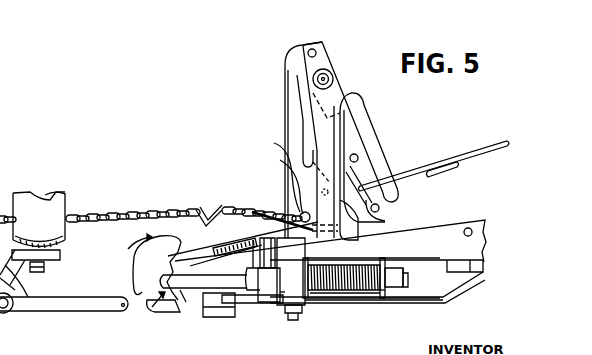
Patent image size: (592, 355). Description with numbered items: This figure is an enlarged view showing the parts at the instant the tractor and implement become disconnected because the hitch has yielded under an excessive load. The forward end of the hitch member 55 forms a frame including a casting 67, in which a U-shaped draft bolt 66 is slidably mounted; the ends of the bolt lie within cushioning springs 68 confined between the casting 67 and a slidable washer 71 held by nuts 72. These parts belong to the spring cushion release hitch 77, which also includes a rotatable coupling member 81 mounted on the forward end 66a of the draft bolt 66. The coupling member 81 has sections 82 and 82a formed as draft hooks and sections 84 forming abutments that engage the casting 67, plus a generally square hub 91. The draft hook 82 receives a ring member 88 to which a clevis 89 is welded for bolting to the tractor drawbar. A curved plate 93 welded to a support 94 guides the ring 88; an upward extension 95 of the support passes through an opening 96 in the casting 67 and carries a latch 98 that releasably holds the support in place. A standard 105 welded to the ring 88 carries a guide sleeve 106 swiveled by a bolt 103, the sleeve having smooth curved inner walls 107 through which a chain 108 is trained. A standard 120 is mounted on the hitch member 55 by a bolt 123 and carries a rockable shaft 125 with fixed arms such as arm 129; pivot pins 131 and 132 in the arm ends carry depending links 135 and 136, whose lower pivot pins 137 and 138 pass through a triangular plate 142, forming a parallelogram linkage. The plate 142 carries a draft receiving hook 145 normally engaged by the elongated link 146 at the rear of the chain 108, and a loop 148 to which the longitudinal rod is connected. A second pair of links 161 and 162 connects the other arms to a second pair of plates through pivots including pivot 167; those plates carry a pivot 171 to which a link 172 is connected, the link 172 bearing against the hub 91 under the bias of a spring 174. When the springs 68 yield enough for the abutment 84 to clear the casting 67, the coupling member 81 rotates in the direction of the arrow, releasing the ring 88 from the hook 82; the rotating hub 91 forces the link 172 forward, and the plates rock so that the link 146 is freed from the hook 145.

The hitch member 55 is at (447, 218).
The draft bolt 66 is at (403, 268).
The forward end of the draft bolt 66a is at (190, 282).
The casting 67 is at (282, 292).
The cushioning springs 68 is at (350, 280).
The slidable washer 71 is at (387, 298).
The nuts 72 is at (392, 268).
The spring cushion release hitch 77 is at (322, 309).
The rotatable coupling member 81 is at (126, 251).
The draft hook 82 is at (134, 290).
The draft hook section 82a is at (190, 302).
The abutments 84 is at (165, 302).
The ring member 88 is at (95, 312).
The clevis 89 is at (10, 316).
The hub 91 is at (146, 312).
The curved plate 93 is at (218, 310).
The support 94 is at (270, 287).
The upward extension 95 is at (253, 240).
The opening 96 is at (257, 283).
The latch 98 is at (266, 245).
The bolt 103 is at (45, 271).
The standard 105 is at (25, 302).
The guide sleeve 106 is at (25, 200).
The inner walls 107 is at (60, 198).
The chain 108 is at (137, 213).
The standard 120 is at (306, 131).
The bolt 123 is at (300, 318).
The shaft 125 is at (332, 78).
The arm 129 is at (322, 62).
The pivot pin 131 is at (313, 48).
The pivot pin 132 is at (341, 101).
The link 135 is at (300, 88).
The link 136 is at (360, 137).
The pivot pin 137 is at (363, 152).
The pivot pin 138 is at (408, 192).
The triangular plate 142 is at (358, 176).
The draft receiving hook 145 is at (348, 239).
The elongated link 146 is at (304, 213).
The loop 148 is at (430, 172).
The depending link 161 is at (293, 110).
The depending link 162 is at (348, 128).
The pivot pin 167 is at (276, 144).
The pivot 171 is at (282, 161).
The link 172 is at (225, 240).
The spring 174 is at (209, 216).